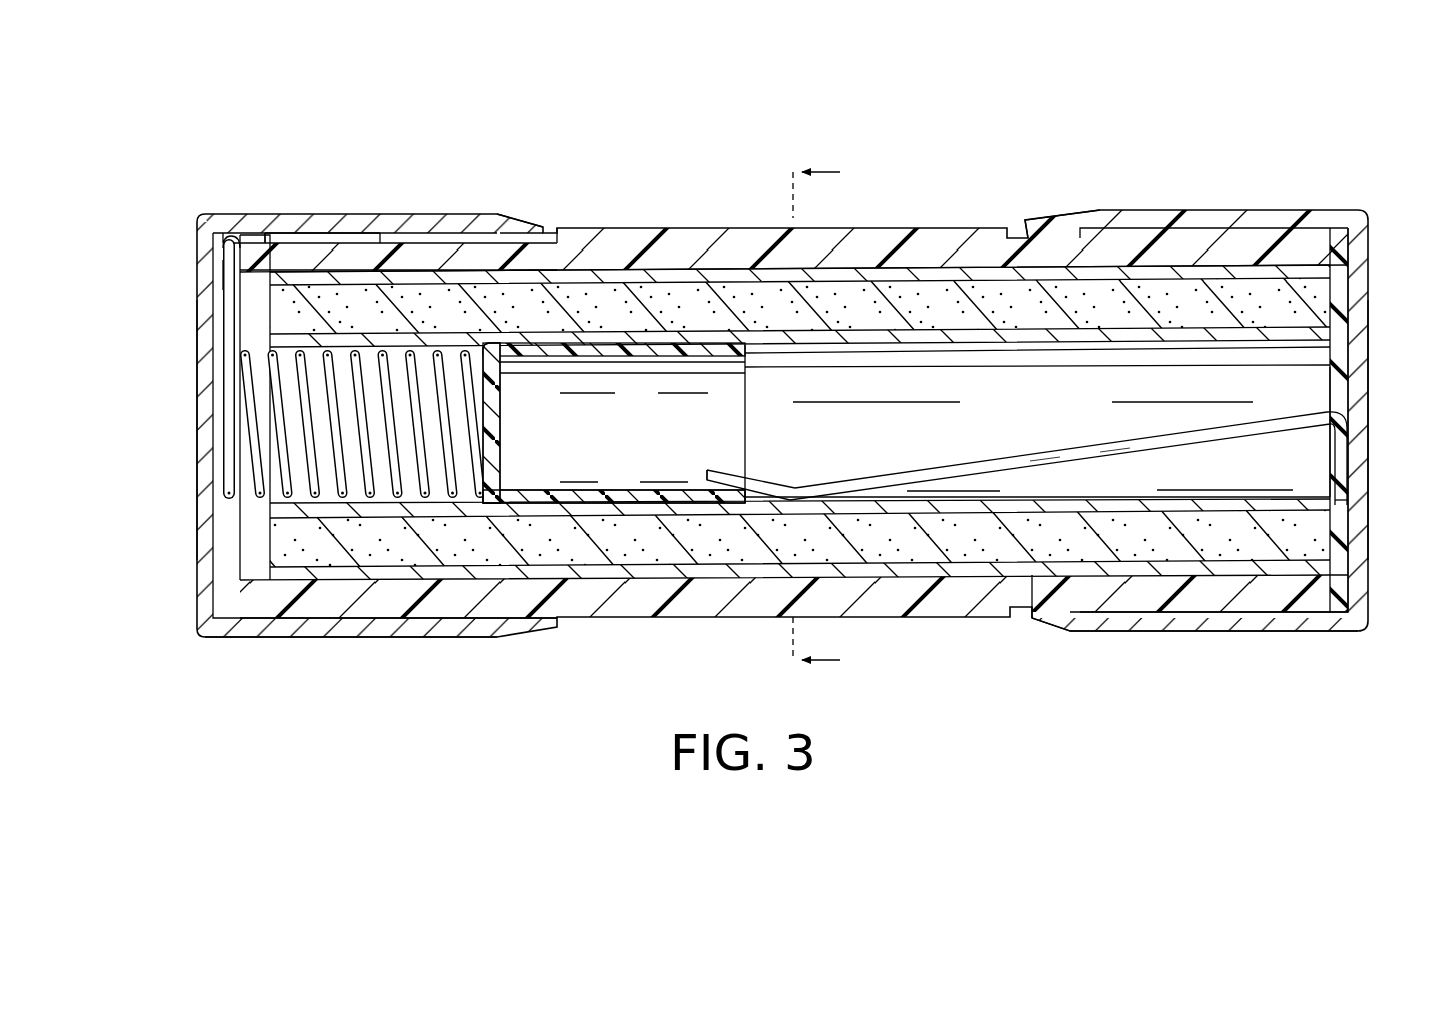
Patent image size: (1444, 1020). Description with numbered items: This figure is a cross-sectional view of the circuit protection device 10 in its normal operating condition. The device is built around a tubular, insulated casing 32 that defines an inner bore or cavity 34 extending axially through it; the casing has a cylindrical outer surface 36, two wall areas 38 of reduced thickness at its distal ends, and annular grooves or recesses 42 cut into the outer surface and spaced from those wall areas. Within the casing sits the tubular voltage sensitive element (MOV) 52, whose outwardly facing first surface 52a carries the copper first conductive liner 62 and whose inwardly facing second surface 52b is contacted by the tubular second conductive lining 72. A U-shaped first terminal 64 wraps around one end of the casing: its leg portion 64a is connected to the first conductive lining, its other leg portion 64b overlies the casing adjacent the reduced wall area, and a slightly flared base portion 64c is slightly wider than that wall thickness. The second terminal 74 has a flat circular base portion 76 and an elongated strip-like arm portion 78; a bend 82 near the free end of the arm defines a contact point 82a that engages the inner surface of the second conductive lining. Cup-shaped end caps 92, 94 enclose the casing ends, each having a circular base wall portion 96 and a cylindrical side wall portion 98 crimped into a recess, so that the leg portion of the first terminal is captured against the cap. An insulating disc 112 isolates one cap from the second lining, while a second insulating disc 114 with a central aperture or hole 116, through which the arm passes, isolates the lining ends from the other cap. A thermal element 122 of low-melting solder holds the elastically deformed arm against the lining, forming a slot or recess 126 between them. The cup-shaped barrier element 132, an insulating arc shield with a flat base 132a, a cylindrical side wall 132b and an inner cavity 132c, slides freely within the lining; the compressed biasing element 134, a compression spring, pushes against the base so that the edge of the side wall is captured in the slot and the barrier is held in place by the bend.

The circuit protection device 10 is at (996, 138).
The casing 32 is at (651, 226).
The inner bore or cavity 34 is at (258, 573).
The outer surface 36 is at (626, 228).
The wall area of reduced thickness 38 is at (341, 246).
The annular groove or recess 42 is at (513, 221).
The voltage sensitive element (MOV) 52 is at (920, 281).
The first surface 52a is at (831, 280).
The second surface 52b is at (985, 336).
The first conductive liner 62 is at (603, 250).
The first terminal 64 is at (306, 228).
The leg portion 64a is at (236, 292).
The leg portion 64b is at (275, 232).
The base portion 64c is at (230, 236).
The second conductive lining 72 is at (965, 503).
The second terminal 74 is at (1107, 437).
The base portion 76 is at (1348, 505).
The arm portion 78 is at (1041, 452).
The bend 82 is at (798, 489).
The contact point 82a is at (779, 500).
The end cap 92 is at (327, 642).
The end cap 94 is at (1209, 634).
The base wall portion 96 is at (1365, 278).
The side wall portion 98 is at (361, 640).
The insulating disc 112 is at (228, 279).
The second insulating disc 114 is at (1352, 303).
The aperture or hole 116 is at (1352, 388).
The thermal element 122 is at (776, 501).
The slot or recess 126 is at (757, 494).
The barrier element 132 is at (657, 338).
The base 132a is at (472, 410).
The side wall 132b is at (632, 505).
The inner cavity 132c is at (723, 407).
The biasing element 134 is at (386, 354).